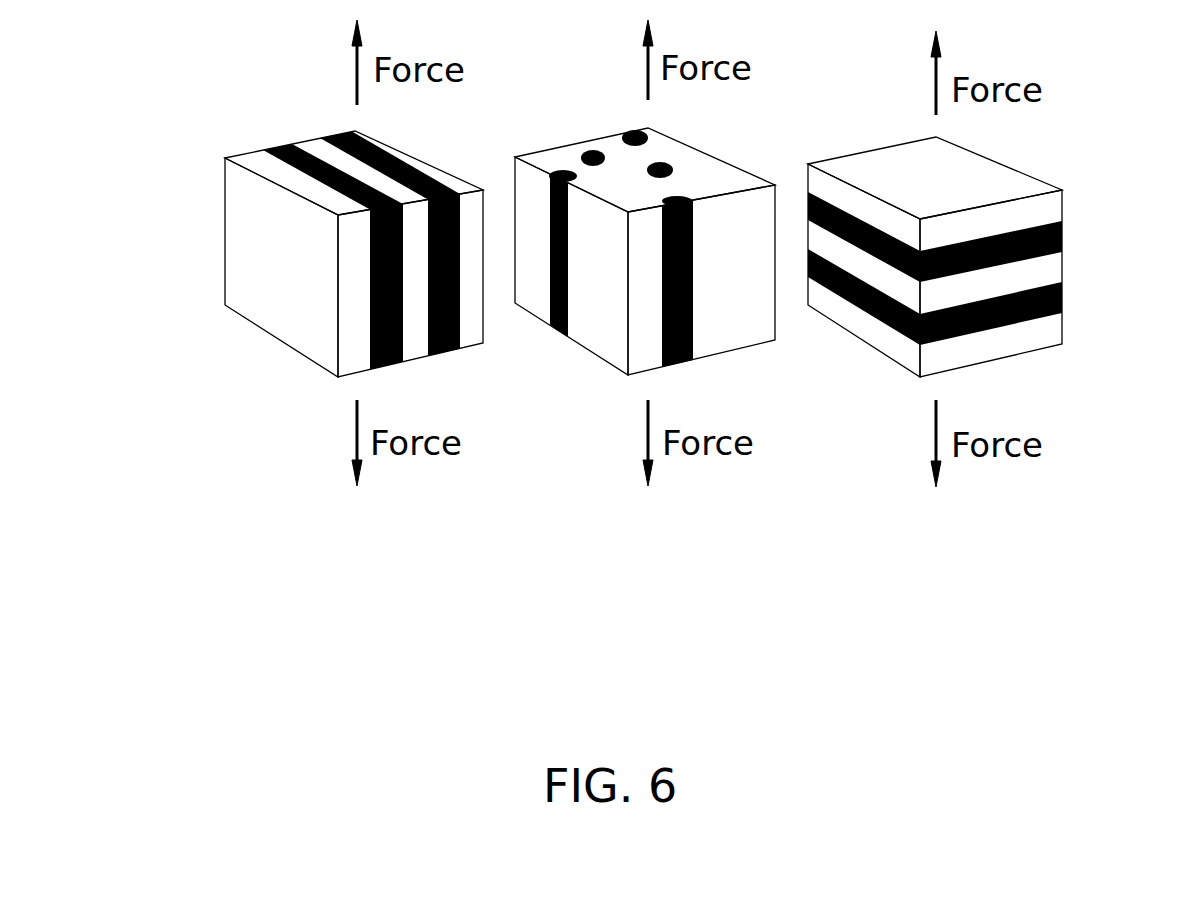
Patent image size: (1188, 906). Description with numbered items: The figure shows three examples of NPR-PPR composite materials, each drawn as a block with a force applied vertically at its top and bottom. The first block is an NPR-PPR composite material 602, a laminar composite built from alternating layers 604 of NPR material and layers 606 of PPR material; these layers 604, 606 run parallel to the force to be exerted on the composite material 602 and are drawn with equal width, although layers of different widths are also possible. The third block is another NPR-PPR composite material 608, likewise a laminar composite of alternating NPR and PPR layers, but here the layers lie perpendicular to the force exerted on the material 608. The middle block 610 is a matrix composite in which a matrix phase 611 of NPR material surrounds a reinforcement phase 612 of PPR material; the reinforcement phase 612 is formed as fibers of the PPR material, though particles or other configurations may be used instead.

The NPR-PPR composite material 602 is at (332, 251).
The layers of NPR material 604 is at (445, 350).
The layers of PPR material 606 is at (247, 153).
The NPR-PPR composite material 608 is at (1104, 340).
The energy absorbing material block with rod-like stiffening elements 610 is at (674, 248).
The matrix phase 611 is at (568, 160).
The reinforcement phase 612 is at (673, 168).